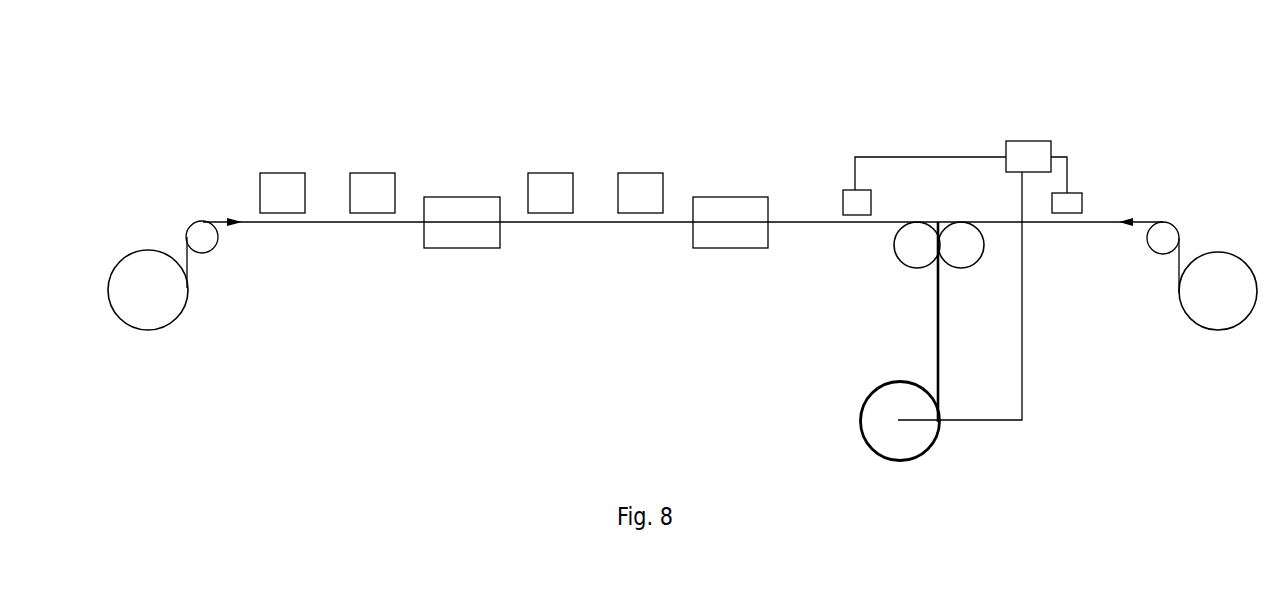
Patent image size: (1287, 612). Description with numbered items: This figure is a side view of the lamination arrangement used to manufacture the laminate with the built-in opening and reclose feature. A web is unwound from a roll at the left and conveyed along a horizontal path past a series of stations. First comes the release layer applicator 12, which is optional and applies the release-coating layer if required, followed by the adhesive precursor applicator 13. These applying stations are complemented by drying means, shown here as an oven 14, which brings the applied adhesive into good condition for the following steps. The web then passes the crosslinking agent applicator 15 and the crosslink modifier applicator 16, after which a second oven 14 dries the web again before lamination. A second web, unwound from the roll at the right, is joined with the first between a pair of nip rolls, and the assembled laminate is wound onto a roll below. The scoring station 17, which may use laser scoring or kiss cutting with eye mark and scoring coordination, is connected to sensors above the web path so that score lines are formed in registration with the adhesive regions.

The release layer applicator 12 is at (283, 183).
The adhesive precursor applicator 13 is at (376, 183).
The oven 14 is at (462, 210).
The crosslinking agent applicator 15 is at (552, 183).
The crosslink modifier applicator 16 is at (639, 183).
The scoring station 17 is at (1029, 153).